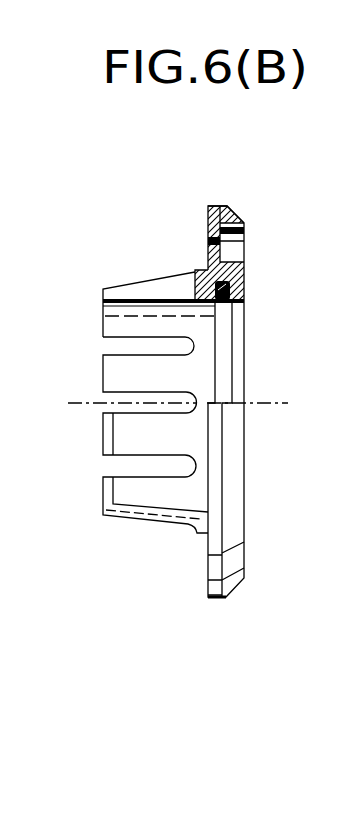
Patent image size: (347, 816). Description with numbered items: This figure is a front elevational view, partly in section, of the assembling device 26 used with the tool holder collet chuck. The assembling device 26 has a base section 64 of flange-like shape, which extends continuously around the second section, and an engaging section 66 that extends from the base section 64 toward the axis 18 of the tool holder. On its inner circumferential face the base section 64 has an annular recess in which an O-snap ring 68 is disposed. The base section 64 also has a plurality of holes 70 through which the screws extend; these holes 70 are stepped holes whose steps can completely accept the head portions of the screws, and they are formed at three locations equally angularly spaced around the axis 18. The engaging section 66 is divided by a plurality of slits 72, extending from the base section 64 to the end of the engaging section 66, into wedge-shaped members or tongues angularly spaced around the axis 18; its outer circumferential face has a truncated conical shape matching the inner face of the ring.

The assembling device 26 is at (270, 210).
The base section 64 is at (229, 208).
The holes 70 is at (240, 259).
The O-snap ring 68 is at (240, 302).
The engaging section 66 is at (148, 279).
The slits 72 is at (120, 407).
The axis 18 is at (270, 407).